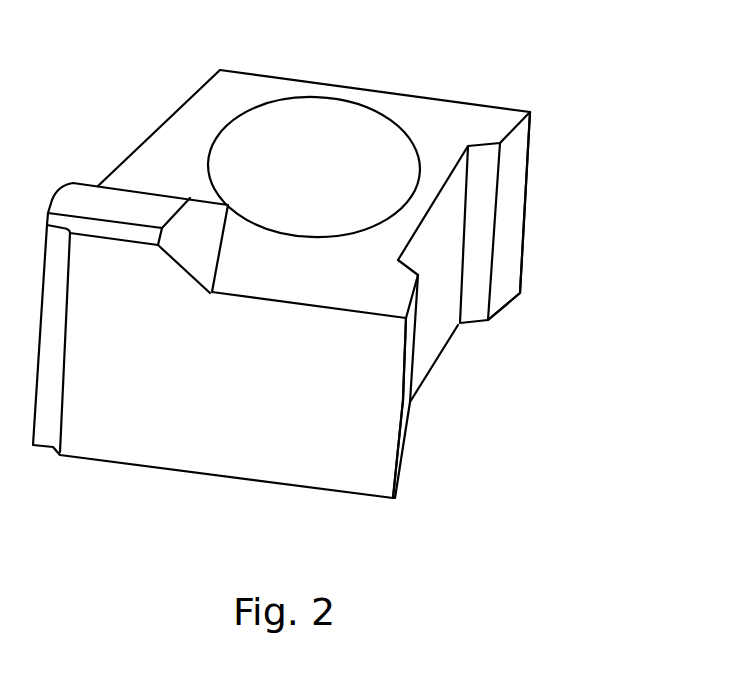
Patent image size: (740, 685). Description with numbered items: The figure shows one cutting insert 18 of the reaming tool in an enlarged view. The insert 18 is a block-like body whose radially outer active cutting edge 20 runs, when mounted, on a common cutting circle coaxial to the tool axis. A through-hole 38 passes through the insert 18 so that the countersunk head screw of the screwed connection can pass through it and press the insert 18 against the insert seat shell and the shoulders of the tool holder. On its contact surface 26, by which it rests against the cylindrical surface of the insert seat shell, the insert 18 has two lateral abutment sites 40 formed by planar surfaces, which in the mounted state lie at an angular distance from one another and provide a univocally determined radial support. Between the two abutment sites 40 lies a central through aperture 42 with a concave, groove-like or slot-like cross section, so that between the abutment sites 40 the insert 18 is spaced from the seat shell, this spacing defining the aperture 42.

The cutting insert 18 is at (473, 100).
The active cutting edge 20 is at (163, 228).
The contact surface 26 is at (522, 160).
The through-hole 38 is at (346, 112).
The abutment site 40 is at (500, 282).
The central through aperture 42 is at (422, 328).